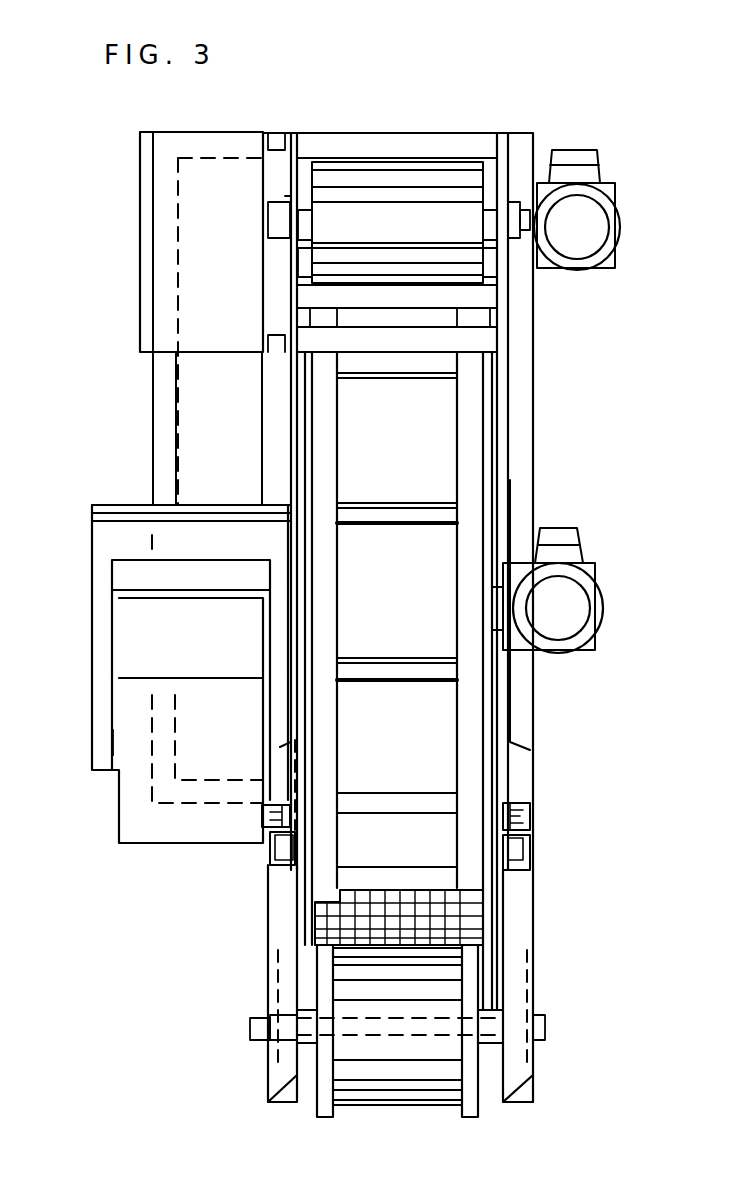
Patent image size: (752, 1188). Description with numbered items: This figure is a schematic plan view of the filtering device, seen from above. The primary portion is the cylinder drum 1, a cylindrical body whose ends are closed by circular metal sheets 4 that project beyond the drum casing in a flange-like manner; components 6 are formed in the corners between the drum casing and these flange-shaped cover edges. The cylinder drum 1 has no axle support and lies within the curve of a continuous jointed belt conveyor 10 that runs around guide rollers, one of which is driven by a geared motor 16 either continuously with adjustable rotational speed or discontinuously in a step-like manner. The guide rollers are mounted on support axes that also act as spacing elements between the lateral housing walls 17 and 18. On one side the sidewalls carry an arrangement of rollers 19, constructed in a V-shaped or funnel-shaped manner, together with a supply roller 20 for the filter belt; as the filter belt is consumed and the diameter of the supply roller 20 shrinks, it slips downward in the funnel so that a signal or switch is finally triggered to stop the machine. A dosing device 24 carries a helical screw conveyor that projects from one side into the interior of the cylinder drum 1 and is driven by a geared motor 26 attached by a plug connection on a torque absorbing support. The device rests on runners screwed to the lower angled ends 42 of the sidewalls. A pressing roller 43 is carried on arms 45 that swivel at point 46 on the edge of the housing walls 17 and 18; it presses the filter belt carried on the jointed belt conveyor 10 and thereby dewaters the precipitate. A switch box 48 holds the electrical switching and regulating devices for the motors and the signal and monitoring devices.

The cylinder drum 1 is at (423, 477).
The circular metal sheets 4 is at (483, 412).
The components 6 is at (460, 548).
The jointed belt conveyor 10 is at (312, 928).
The geared motor 16 is at (605, 240).
The lateral housing wall 17 is at (295, 443).
The lateral housing wall 18 is at (513, 488).
The arrangement of rollers 19 is at (467, 142).
The supply roller 20 is at (400, 185).
The dosing device 24 is at (148, 647).
The geared motor 26 is at (573, 623).
The lower angled ends 42 is at (520, 722).
The pressing roller 43 is at (410, 1085).
The arms 45 is at (520, 942).
The point 46 is at (513, 825).
The switch box 48 is at (185, 297).